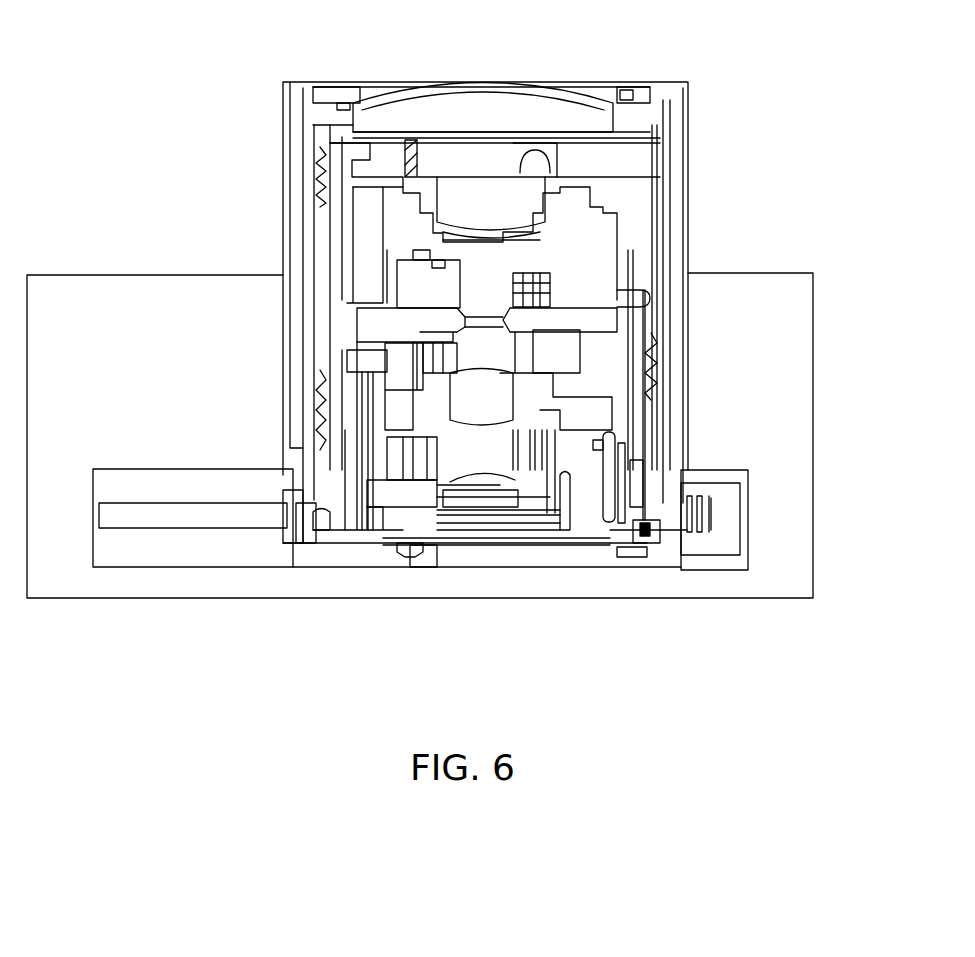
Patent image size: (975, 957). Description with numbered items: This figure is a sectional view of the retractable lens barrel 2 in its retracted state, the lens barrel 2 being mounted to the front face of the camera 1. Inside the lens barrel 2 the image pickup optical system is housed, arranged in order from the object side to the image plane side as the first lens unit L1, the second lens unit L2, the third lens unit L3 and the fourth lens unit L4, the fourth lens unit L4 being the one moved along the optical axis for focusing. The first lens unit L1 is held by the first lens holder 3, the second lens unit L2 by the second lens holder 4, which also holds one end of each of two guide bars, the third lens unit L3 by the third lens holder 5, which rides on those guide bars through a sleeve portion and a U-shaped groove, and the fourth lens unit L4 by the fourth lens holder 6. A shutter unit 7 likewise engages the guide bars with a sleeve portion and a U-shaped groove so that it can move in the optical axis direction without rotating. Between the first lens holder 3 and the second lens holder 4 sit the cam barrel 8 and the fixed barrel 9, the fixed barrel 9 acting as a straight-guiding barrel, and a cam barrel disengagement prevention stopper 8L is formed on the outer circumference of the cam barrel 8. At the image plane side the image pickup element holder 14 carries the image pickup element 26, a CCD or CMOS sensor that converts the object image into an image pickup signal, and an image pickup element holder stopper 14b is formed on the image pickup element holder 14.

The camera 1 is at (793, 273).
The lens barrel 2 is at (725, 126).
The first lens holder 3 is at (657, 108).
The second lens holder 4 is at (613, 195).
The third lens holder 5 is at (540, 417).
The fourth lens holder 6 is at (550, 487).
The shutter unit 7 is at (587, 318).
The cam barrel 8 is at (323, 347).
The cam barrel disengagement prevention stopper 8L is at (302, 505).
The fixed barrel 9 is at (338, 238).
The image pickup element holder 14 is at (368, 535).
The image pickup element holder stopper 14b is at (303, 495).
The image pickup element 26 is at (488, 537).
The first lens unit L1 is at (498, 88).
The second lens unit L2 is at (517, 190).
The third lens unit L3 is at (495, 402).
The fourth lens unit L4 is at (500, 468).